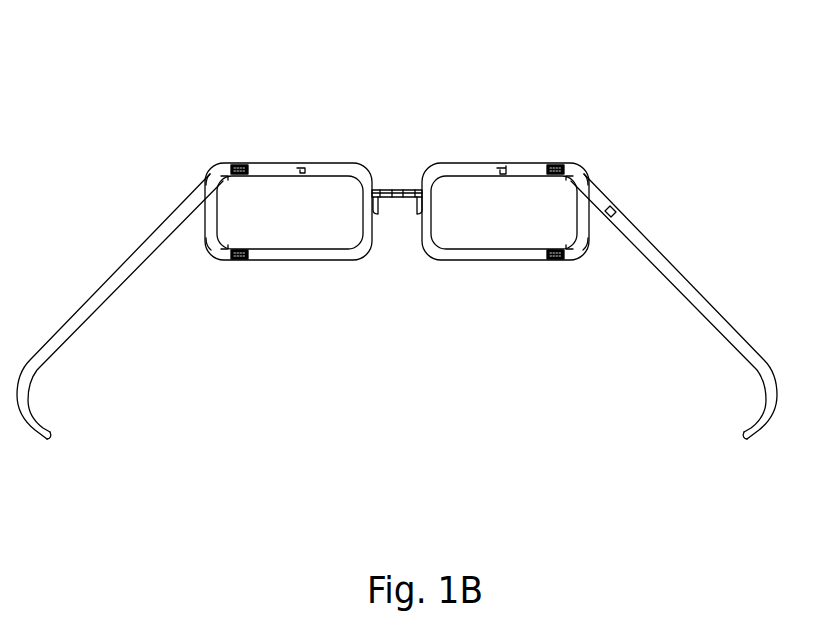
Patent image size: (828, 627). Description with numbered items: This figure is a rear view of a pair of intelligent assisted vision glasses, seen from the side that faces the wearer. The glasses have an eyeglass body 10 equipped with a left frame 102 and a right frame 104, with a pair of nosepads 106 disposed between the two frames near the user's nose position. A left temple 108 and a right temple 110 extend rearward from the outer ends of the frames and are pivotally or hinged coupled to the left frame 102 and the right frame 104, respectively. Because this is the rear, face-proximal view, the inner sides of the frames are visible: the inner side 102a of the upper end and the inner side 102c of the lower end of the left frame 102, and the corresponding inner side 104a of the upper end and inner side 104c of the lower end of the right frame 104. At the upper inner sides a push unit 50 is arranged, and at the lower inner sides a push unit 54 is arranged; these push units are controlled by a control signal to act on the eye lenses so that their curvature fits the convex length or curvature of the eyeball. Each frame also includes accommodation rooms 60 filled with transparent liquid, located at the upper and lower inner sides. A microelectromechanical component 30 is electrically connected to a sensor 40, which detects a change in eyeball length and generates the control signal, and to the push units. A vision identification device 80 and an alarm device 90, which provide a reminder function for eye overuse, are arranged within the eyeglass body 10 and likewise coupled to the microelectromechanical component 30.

The eyeglass body 10 is at (512, 100).
The microelectromechanical component 30 is at (618, 212).
The sensor 40 is at (497, 170).
The push unit 50 is at (231, 169).
The push unit 54 is at (224, 259).
The accommodation room 60 is at (250, 174).
The vision identification device 80 is at (381, 190).
The alarm device 90 is at (406, 190).
The left frame 102 is at (293, 261).
The inner side of the upper end of the left frame 102a is at (213, 183).
The inner side of the lower end of the left frame 102c is at (210, 245).
The right frame 104 is at (500, 261).
The inner side of the upper end of the right frame 104a is at (583, 184).
The inner side of the lower end of the right frame 104c is at (583, 247).
The pair of nosepads 106 is at (380, 207).
The left temple 108 is at (107, 283).
The right temple 110 is at (667, 254).